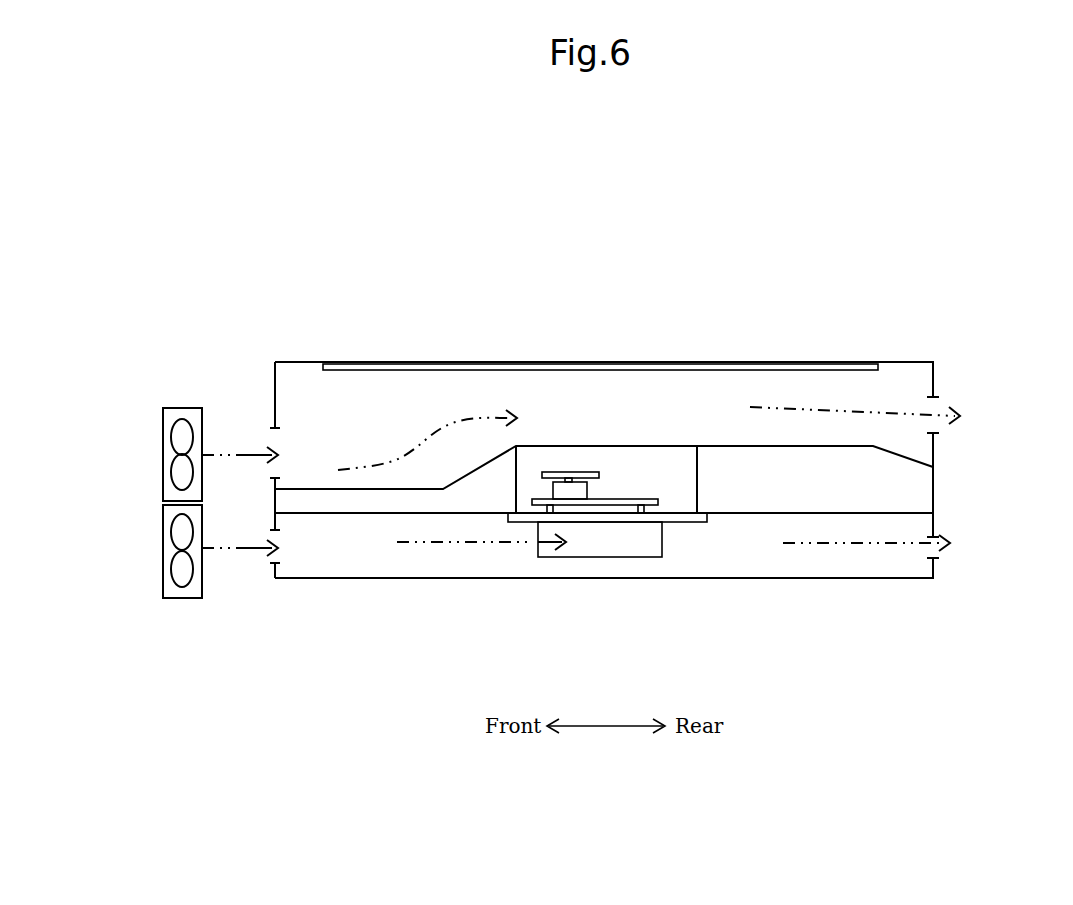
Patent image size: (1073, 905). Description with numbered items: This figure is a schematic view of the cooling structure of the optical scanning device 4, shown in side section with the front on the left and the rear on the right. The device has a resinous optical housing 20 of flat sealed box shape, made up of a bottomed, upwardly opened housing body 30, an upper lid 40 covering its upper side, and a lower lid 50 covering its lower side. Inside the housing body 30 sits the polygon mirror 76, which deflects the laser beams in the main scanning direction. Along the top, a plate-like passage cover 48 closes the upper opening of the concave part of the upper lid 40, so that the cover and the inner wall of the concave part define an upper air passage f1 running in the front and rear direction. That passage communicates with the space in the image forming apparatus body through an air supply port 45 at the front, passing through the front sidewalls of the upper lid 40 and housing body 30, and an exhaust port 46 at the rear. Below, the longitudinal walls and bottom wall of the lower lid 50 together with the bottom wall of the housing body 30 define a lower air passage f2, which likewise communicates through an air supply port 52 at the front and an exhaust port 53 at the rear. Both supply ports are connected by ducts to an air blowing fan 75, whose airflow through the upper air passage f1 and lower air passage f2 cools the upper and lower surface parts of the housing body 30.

The optical scanning device 4 is at (364, 316).
The optical housing 20 is at (899, 357).
The housing body 30 is at (934, 493).
The upper lid 40 is at (934, 379).
The air supply port 45 is at (272, 440).
The exhaust port 46 is at (935, 408).
The passage cover 48 is at (763, 370).
The lower lid 50 is at (935, 567).
The air supply port 52 is at (267, 560).
The exhaust port 53 is at (935, 537).
The air blowing fan 75 is at (163, 553).
The polygon mirror 76 is at (569, 472).
The upper air passage f1 is at (429, 415).
The lower air passage f2 is at (365, 547).